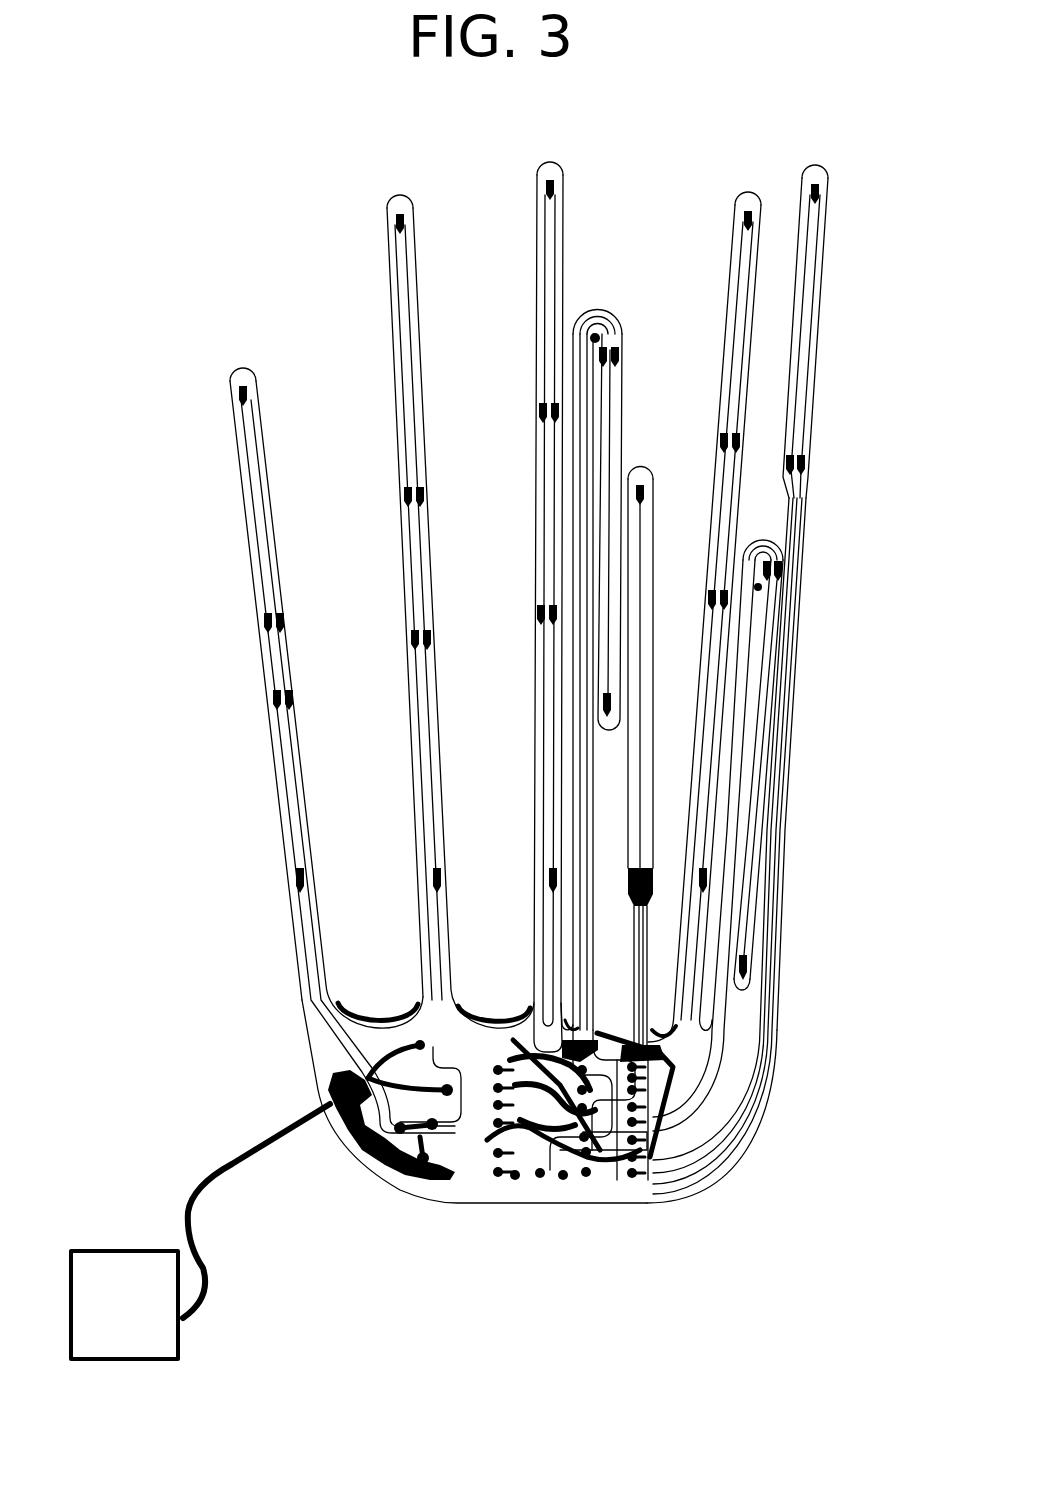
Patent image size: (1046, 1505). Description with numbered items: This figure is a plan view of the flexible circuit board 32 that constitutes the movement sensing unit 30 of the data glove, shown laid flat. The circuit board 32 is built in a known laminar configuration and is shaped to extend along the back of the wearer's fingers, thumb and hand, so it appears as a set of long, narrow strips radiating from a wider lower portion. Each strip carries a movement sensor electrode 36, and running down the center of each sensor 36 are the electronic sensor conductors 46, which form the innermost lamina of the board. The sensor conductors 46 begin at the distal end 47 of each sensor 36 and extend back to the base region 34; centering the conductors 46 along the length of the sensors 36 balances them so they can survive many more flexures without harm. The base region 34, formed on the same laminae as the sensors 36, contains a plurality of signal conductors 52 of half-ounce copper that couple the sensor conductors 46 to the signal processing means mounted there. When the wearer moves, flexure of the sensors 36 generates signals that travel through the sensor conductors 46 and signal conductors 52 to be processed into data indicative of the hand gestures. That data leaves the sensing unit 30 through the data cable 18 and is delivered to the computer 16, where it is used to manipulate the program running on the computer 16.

The computer 16 is at (123, 1245).
The data cable 18 is at (265, 1150).
The movement sensing unit 30 is at (243, 858).
The flexible circuit board 32 is at (710, 1180).
The base region 34 is at (467, 1148).
The movement sensor electrodes 36 is at (624, 337).
The sensor conductors 46 is at (550, 218).
The distal end 47 is at (746, 185).
The signal conductors 52 is at (418, 1180).